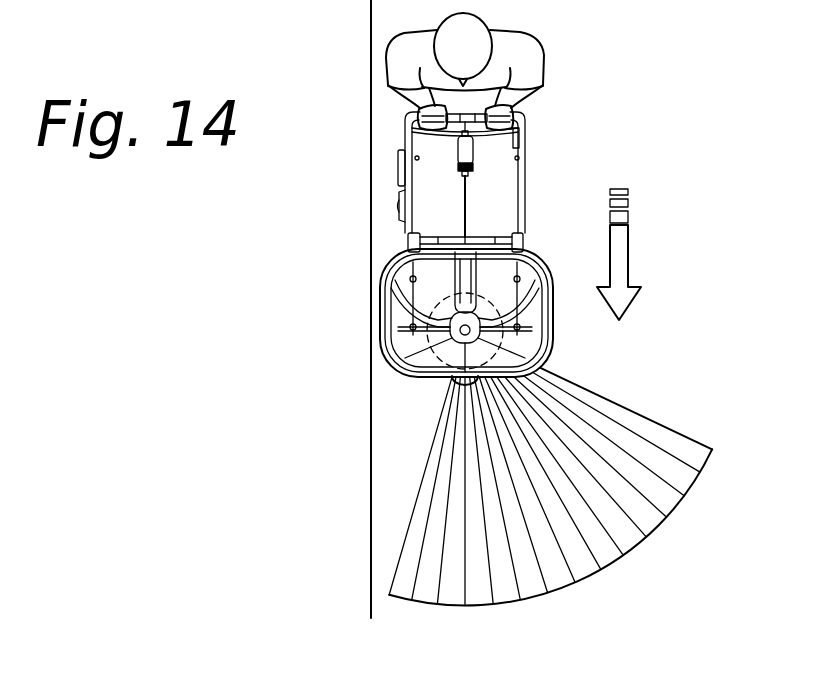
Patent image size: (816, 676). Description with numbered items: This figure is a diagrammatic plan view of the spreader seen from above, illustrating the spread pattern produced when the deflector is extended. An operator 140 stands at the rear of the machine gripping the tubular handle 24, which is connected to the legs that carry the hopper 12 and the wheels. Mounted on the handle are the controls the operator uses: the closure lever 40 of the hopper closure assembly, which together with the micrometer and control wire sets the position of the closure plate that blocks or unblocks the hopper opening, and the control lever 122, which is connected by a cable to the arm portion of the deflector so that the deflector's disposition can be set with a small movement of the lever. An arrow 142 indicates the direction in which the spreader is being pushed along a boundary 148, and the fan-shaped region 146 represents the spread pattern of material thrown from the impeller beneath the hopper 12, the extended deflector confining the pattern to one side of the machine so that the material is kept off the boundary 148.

The operator 140 is at (527, 52).
The tubular handle 24 is at (522, 157).
The control lever 122 is at (400, 167).
The closure lever 40 is at (501, 134).
The direction of movement arrow 142 is at (623, 248).
The hopper 12 is at (553, 333).
The swept area 146 is at (652, 430).
The wall 148 is at (371, 441).